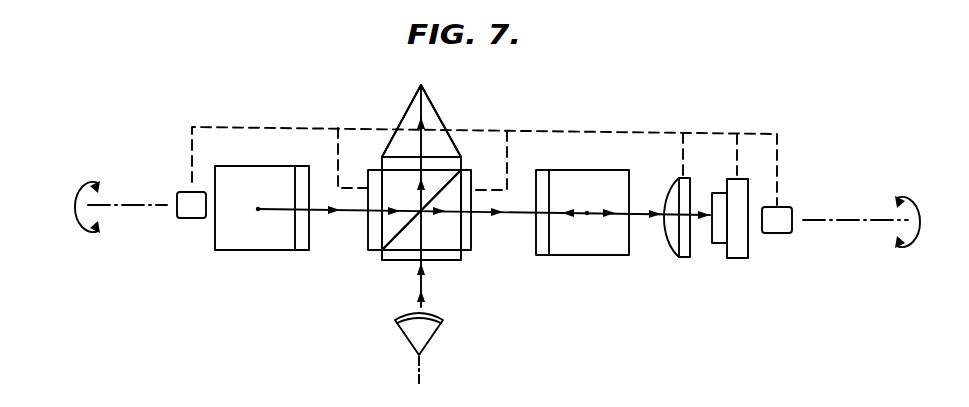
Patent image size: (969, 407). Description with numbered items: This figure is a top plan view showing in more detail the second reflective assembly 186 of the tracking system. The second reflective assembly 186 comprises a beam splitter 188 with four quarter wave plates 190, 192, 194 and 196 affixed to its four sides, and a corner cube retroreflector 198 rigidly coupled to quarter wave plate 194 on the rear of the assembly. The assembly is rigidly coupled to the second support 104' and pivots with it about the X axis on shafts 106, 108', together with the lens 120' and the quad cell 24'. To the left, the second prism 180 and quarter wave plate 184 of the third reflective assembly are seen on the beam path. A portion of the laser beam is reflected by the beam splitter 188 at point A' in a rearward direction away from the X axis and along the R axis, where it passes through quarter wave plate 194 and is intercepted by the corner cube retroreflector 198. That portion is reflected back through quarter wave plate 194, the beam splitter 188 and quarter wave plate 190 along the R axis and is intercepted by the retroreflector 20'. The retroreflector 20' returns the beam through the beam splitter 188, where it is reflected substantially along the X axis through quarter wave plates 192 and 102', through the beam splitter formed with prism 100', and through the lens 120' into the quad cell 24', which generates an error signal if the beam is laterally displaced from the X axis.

The X axis X is at (144, 198).
The R axis R is at (430, 372).
The point A' is at (403, 197).
The retroreflector 20' is at (401, 334).
The quad cell 24' is at (744, 241).
The prism 100' is at (589, 237).
The quarter wave plate 102' is at (528, 237).
The second support 104' is at (484, 146).
The shaft 106 is at (181, 230).
The shaft 108' is at (797, 246).
The lens 120' is at (686, 244).
The second prism 180 is at (228, 250).
The quarter wave plate 184 is at (300, 250).
The second reflective assembly 186 is at (484, 99).
The beam splitter 188 is at (452, 245).
The quarter wave plate 190 is at (391, 261).
The quarter wave plate 192 is at (472, 170).
The quarter wave plate 194 is at (381, 160).
The quarter wave plate 196 is at (368, 242).
The corner cube retroreflector 198 is at (433, 104).